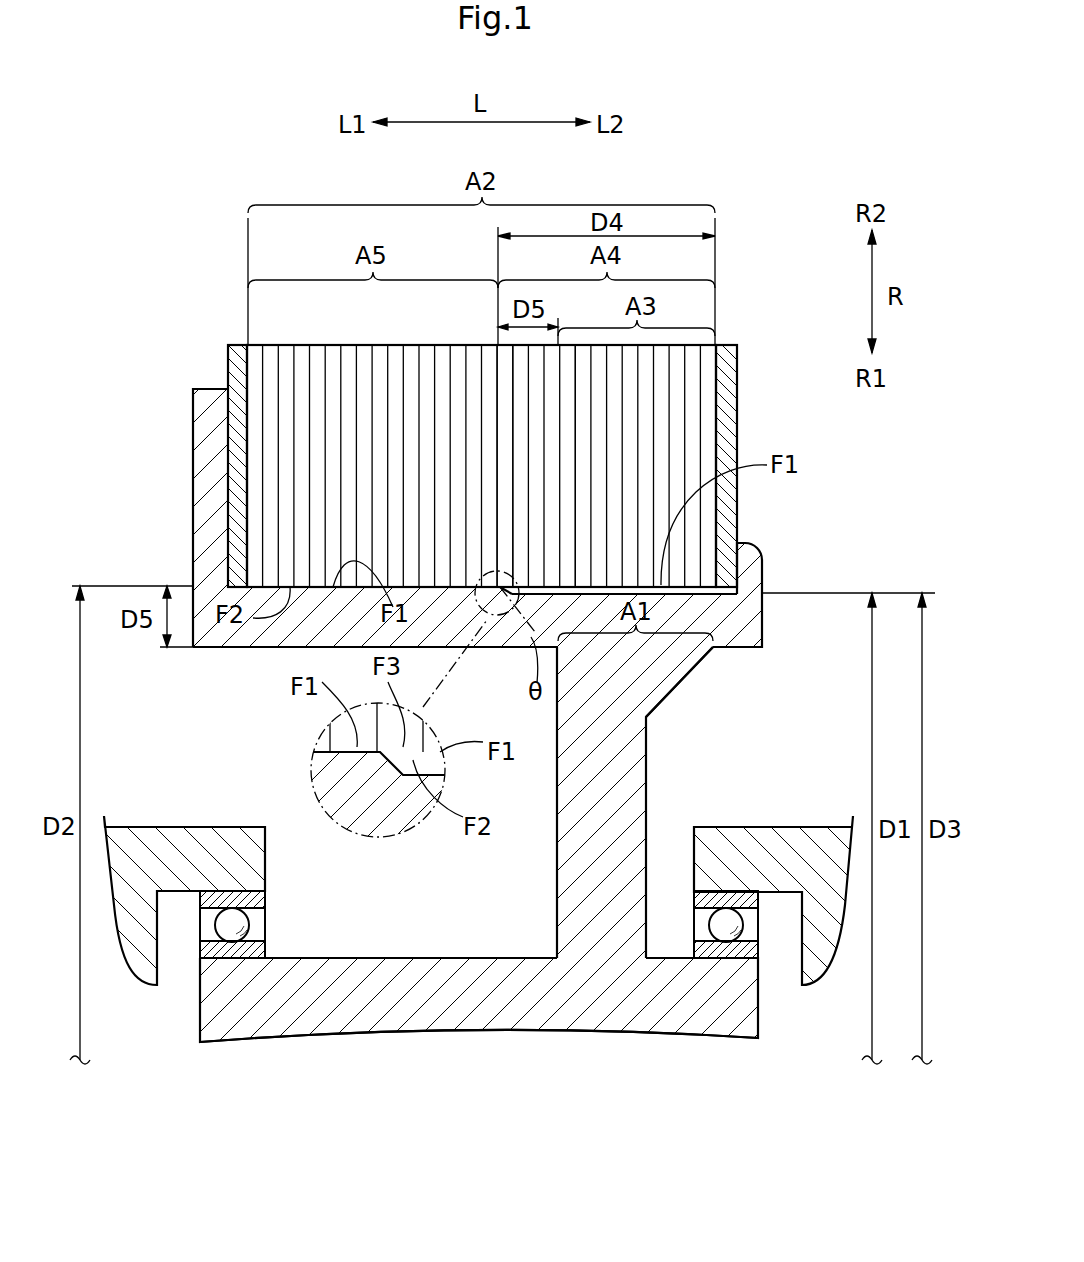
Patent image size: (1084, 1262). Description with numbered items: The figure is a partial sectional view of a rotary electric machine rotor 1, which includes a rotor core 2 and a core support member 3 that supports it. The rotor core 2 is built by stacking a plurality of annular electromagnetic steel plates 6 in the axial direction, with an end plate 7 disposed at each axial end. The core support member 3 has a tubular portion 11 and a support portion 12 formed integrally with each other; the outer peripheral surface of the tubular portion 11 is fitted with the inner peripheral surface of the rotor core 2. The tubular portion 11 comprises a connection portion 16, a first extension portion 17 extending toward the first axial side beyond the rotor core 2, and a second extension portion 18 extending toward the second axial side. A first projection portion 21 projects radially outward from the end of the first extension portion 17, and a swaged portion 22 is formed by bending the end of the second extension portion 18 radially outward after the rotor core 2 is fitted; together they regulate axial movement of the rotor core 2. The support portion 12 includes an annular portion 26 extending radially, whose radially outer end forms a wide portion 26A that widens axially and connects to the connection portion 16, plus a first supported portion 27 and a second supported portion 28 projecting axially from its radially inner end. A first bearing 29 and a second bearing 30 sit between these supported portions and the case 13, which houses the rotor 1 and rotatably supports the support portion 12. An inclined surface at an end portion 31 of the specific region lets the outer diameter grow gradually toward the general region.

The rotary electric machine rotor 1 is at (752, 307).
The rotor core 2 is at (398, 343).
The core support member 3 is at (262, 1068).
The electromagnetic steel plates 6 is at (660, 432).
The end plate 7 is at (228, 357).
The tubular portion 11 is at (217, 675).
The support portion 12 is at (548, 903).
The case 13 is at (200, 832).
The connection portion 16 is at (585, 607).
The first extension portion 17 is at (250, 648).
The second extension portion 18 is at (752, 625).
The first projection portion 21 is at (193, 458).
The swaged portion 22 is at (762, 557).
The annular portion 26 is at (638, 770).
The wide portion 26A is at (667, 680).
The first supported portion 27 is at (323, 965).
The second supported portion 28 is at (673, 960).
The first bearing 29 is at (200, 950).
The second bearing 30 is at (753, 950).
The end portion 31 is at (498, 616).